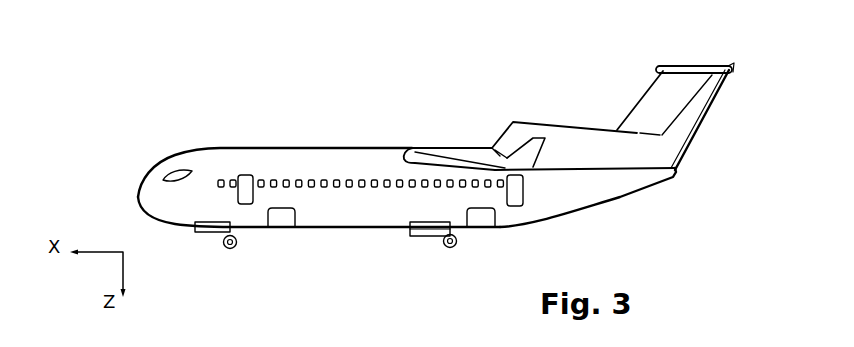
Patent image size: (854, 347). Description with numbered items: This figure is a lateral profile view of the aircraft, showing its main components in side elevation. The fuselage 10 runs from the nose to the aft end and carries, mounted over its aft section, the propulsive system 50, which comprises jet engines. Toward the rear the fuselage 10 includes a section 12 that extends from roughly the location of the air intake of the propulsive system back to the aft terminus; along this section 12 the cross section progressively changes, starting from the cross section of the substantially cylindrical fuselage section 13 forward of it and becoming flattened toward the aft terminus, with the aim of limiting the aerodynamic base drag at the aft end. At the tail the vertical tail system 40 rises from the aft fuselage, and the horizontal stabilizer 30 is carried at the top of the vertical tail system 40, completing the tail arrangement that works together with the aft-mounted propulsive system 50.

The fuselage 10 is at (300, 147).
The section of the fuselage 12 is at (562, 220).
The substantially cylindrical fuselage section 13 is at (325, 229).
The horizontal stabilizer 30 is at (682, 62).
The vertical tail system 40 is at (714, 118).
The propulsive system 50 is at (577, 123).